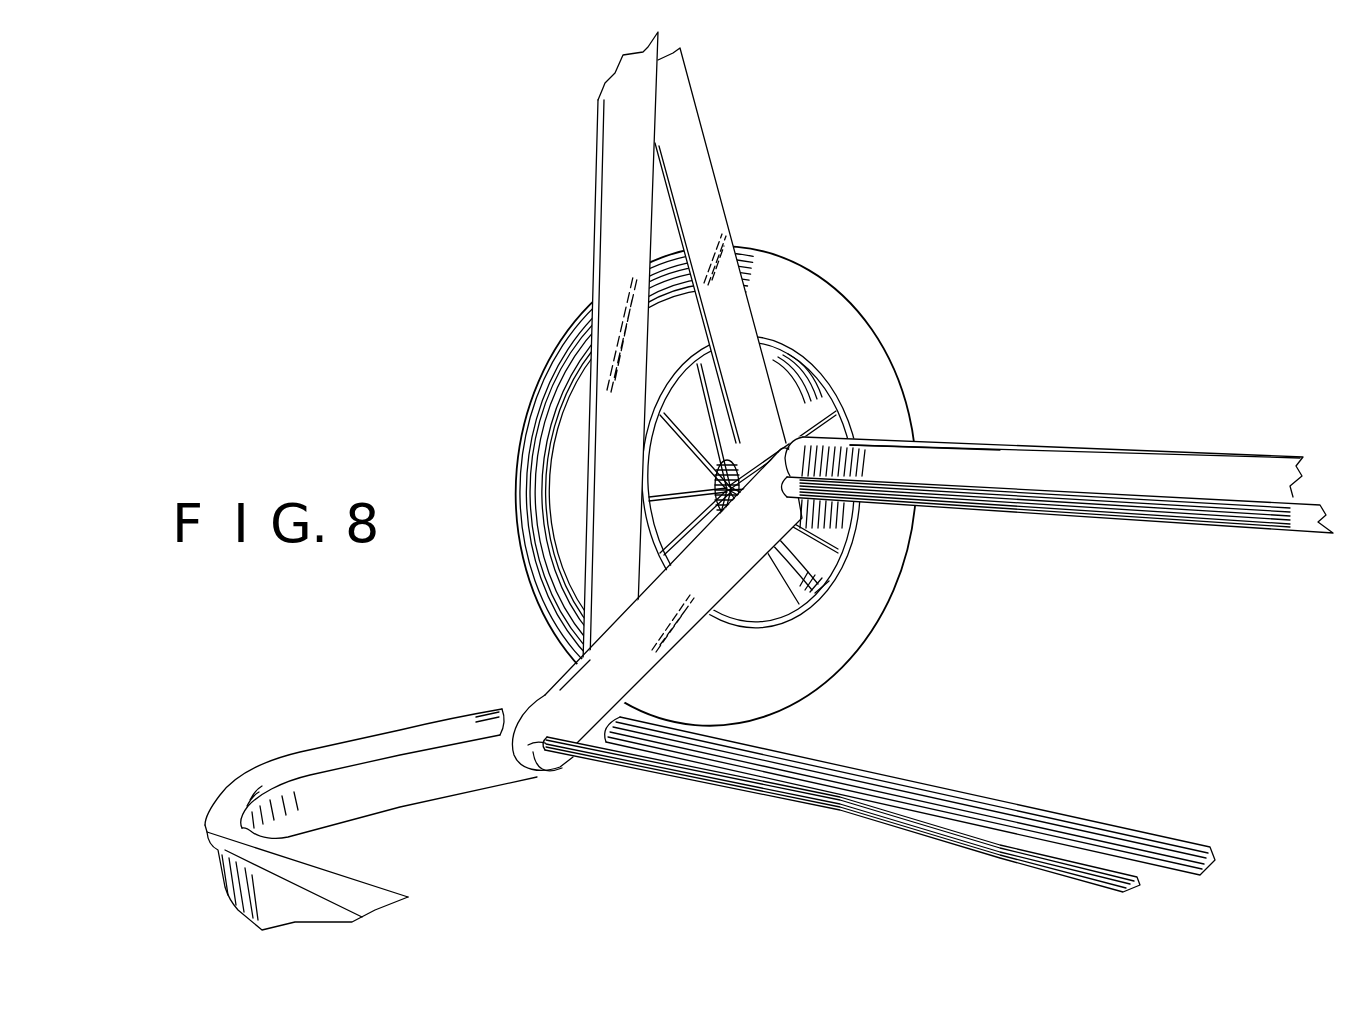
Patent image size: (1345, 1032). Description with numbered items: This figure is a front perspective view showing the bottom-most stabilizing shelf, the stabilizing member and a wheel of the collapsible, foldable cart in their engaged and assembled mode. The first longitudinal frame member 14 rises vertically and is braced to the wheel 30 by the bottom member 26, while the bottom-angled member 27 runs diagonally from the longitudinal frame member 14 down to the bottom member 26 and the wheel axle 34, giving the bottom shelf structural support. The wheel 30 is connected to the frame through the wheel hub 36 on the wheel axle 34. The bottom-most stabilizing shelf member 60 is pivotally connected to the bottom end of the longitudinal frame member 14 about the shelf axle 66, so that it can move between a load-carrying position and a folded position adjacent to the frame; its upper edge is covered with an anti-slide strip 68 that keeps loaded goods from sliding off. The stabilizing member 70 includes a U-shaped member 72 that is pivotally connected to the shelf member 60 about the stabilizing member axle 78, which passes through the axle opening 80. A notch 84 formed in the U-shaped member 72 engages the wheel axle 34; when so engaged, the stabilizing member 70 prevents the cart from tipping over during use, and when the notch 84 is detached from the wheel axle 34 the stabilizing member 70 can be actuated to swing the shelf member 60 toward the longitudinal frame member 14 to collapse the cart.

The first longitudinal frame member 14 is at (622, 215).
The bottom member 26 is at (685, 153).
The bottom-angled member 27 is at (673, 666).
The wheel 30 is at (816, 298).
The wheel axle 34 is at (1137, 508).
The wheel hub 36 is at (807, 405).
The bottom-most stabilizing shelf member 60 is at (432, 793).
The shelf axle 66 is at (900, 776).
The anti-slide strip 68 is at (335, 752).
The stabilizing member 70 is at (1068, 442).
The U-shaped member 72 is at (950, 460).
The stabilizing member axle 78 is at (840, 820).
The axle opening 80 is at (535, 775).
The notch 84 is at (845, 525).